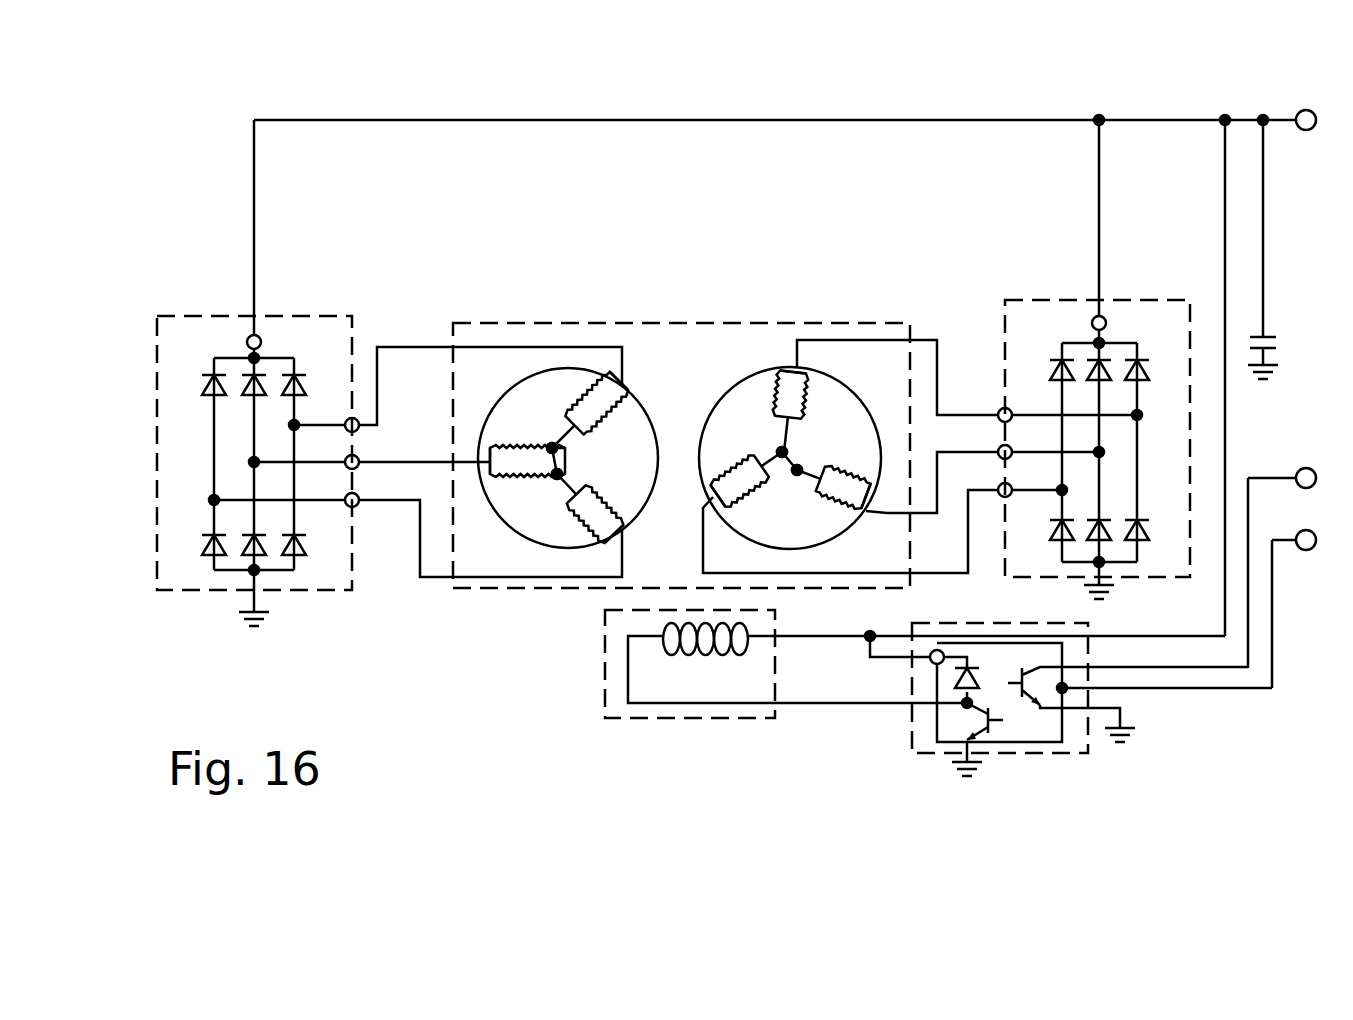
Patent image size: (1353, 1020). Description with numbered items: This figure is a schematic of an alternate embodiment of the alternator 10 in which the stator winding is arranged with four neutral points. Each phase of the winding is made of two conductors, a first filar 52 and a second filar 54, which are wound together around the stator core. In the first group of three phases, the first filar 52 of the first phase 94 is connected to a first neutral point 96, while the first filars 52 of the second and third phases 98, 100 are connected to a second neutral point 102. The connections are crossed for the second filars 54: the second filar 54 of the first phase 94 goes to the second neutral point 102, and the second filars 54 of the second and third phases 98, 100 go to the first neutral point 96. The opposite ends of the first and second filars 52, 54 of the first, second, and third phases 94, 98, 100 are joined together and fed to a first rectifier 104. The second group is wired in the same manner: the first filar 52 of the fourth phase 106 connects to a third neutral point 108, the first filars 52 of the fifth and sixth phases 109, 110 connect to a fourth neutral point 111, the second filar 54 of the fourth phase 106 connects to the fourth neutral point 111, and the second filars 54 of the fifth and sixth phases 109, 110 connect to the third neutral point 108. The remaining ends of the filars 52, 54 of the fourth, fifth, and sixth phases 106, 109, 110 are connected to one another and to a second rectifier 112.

The brushless motor 10 is at (453, 323).
The first filar 52 is at (588, 397).
The second filar 54 is at (502, 445).
The first phase 94 is at (600, 405).
The first neutral point 96 is at (556, 447).
The second phase 98 is at (597, 518).
The third phase 100 is at (510, 466).
The second neutral point 102 is at (556, 477).
The first rectifier 104 is at (157, 316).
The fourth phase 106 is at (800, 388).
The third neutral point 108 is at (780, 452).
The fifth phase 109 is at (868, 498).
The sixth phase 110 is at (728, 487).
The fourth neutral point 111 is at (800, 474).
The second rectifier 112 is at (1192, 470).